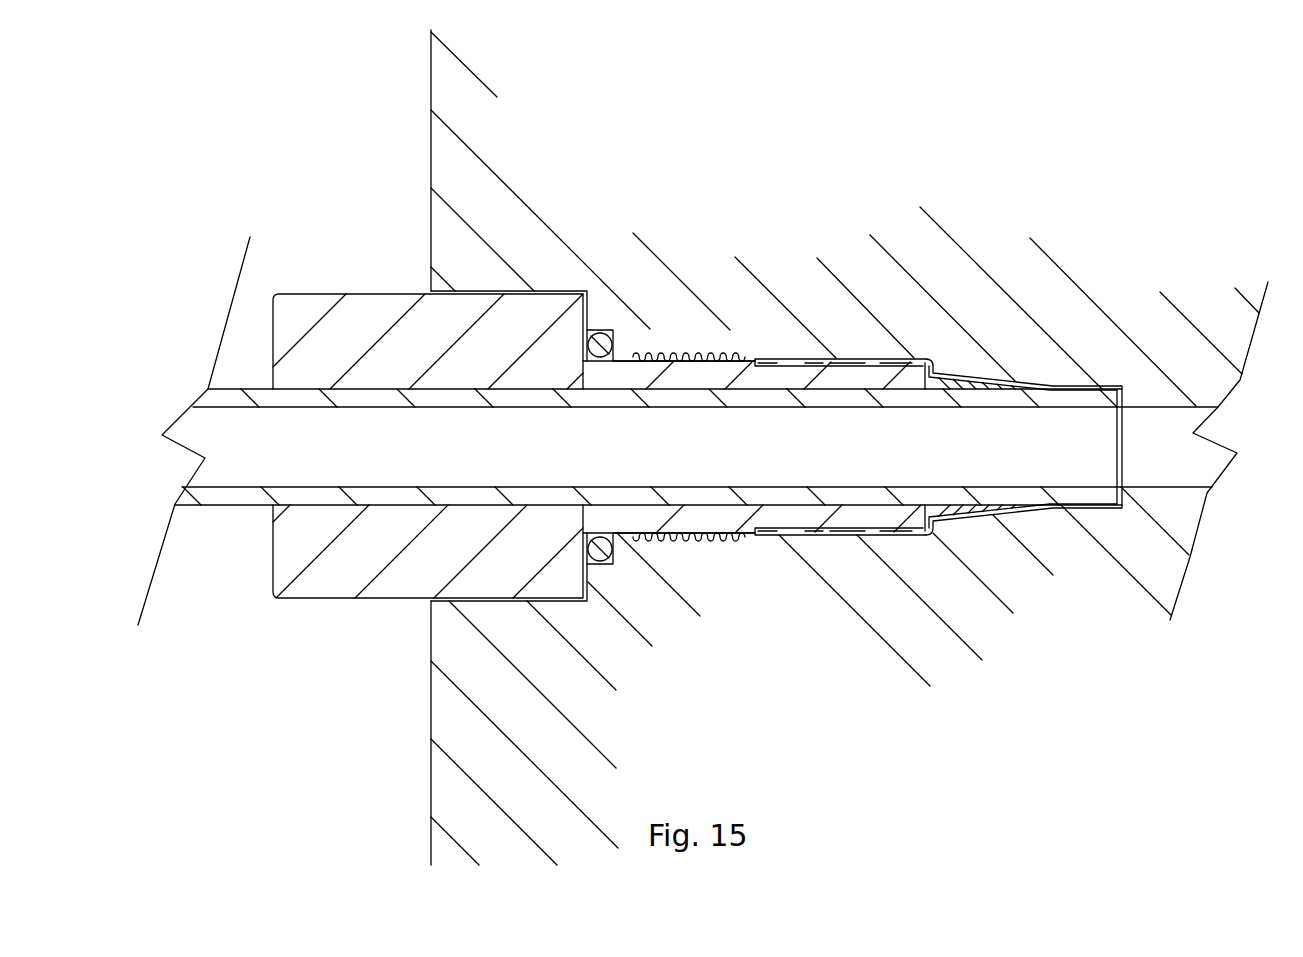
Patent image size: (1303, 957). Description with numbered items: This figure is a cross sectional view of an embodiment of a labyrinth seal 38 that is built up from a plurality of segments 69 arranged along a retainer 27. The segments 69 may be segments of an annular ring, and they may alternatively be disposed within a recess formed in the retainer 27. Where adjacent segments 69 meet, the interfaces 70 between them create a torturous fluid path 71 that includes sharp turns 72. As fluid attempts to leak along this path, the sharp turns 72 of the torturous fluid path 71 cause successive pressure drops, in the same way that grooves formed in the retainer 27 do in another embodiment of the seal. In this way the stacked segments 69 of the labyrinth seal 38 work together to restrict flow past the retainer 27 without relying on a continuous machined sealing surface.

The retainer 27 is at (317, 308).
The labyrinth seal 38 is at (832, 320).
The segments 69 is at (882, 362).
The interfaces 70 is at (905, 535).
The torturous fluid path 71 is at (702, 535).
The sharp turns 72 is at (778, 359).